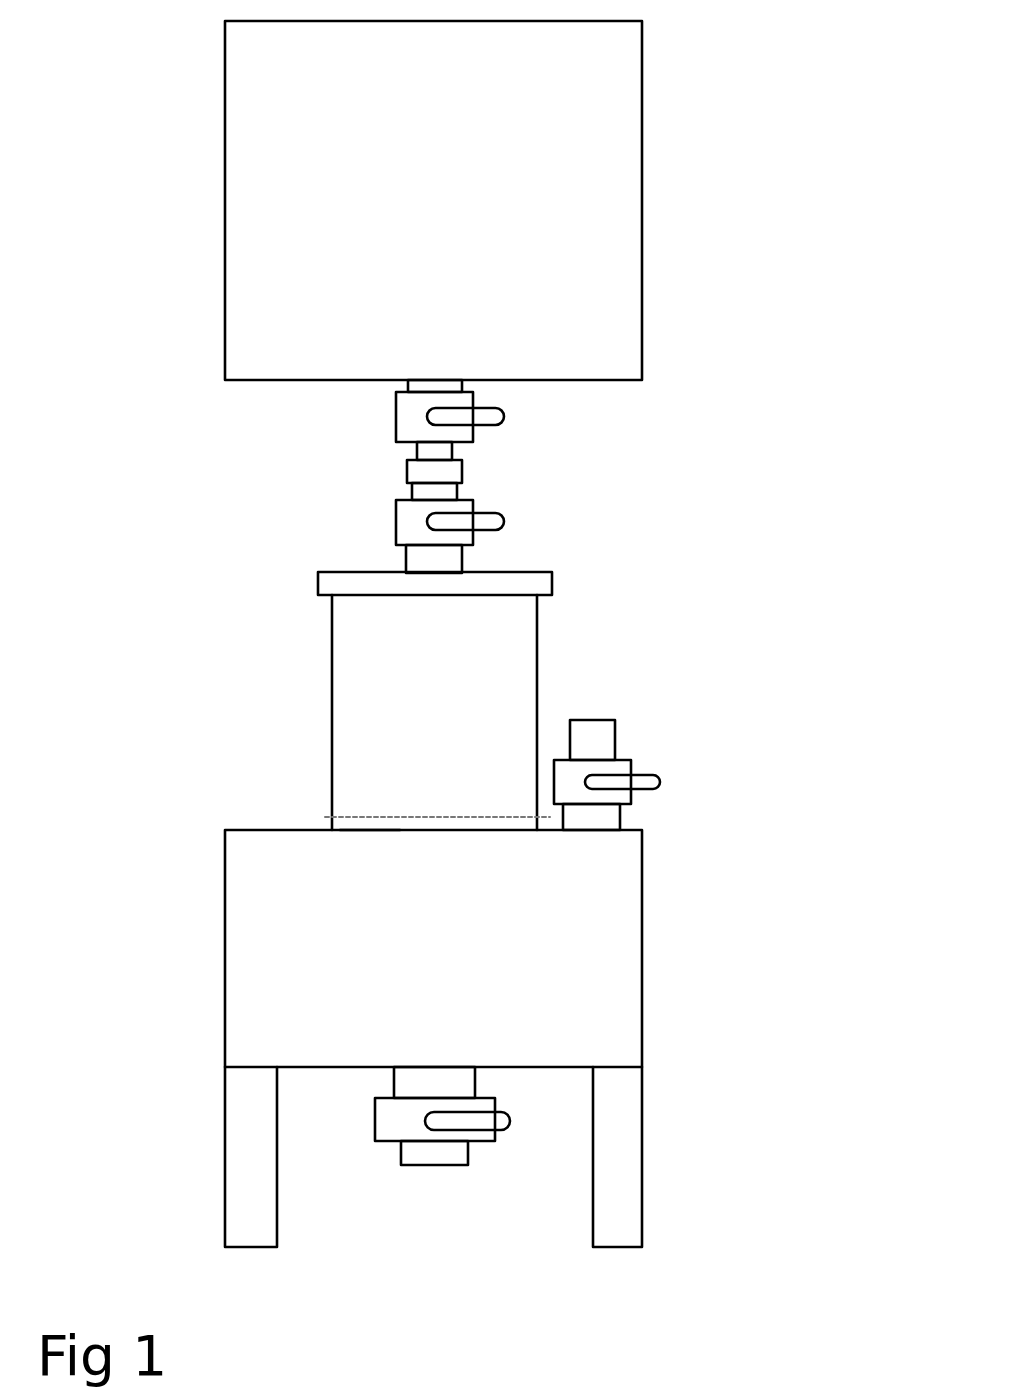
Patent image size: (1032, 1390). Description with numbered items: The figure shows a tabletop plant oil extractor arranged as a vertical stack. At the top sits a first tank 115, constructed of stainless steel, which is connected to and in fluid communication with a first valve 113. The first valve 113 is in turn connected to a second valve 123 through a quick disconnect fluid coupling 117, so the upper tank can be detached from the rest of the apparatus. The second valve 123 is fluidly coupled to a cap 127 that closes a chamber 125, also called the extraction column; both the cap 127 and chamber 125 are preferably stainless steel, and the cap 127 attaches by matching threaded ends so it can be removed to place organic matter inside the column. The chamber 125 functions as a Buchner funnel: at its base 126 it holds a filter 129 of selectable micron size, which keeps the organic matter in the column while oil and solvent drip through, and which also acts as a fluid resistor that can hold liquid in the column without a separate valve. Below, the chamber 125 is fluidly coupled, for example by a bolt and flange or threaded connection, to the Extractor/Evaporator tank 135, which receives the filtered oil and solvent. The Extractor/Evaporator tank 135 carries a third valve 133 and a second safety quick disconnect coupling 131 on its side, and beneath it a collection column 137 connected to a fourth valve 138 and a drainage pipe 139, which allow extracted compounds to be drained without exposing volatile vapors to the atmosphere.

The first tank 115 is at (642, 285).
The first valve 113 is at (473, 436).
The quick disconnect fluid coupling 117 is at (407, 472).
The second valve 123 is at (473, 530).
The cap 127 is at (318, 583).
The chamber 125 is at (537, 710).
The filter 129 is at (320, 817).
The second safety quick disconnect coupling 131 is at (615, 738).
The third valve 133 is at (631, 767).
The Extractor/Evaporator tank 135 is at (642, 985).
The base 126 is at (367, 830).
The collection column 137 is at (412, 1083).
The fourth valve 138 is at (495, 1132).
The drainage pipe 139 is at (468, 1152).